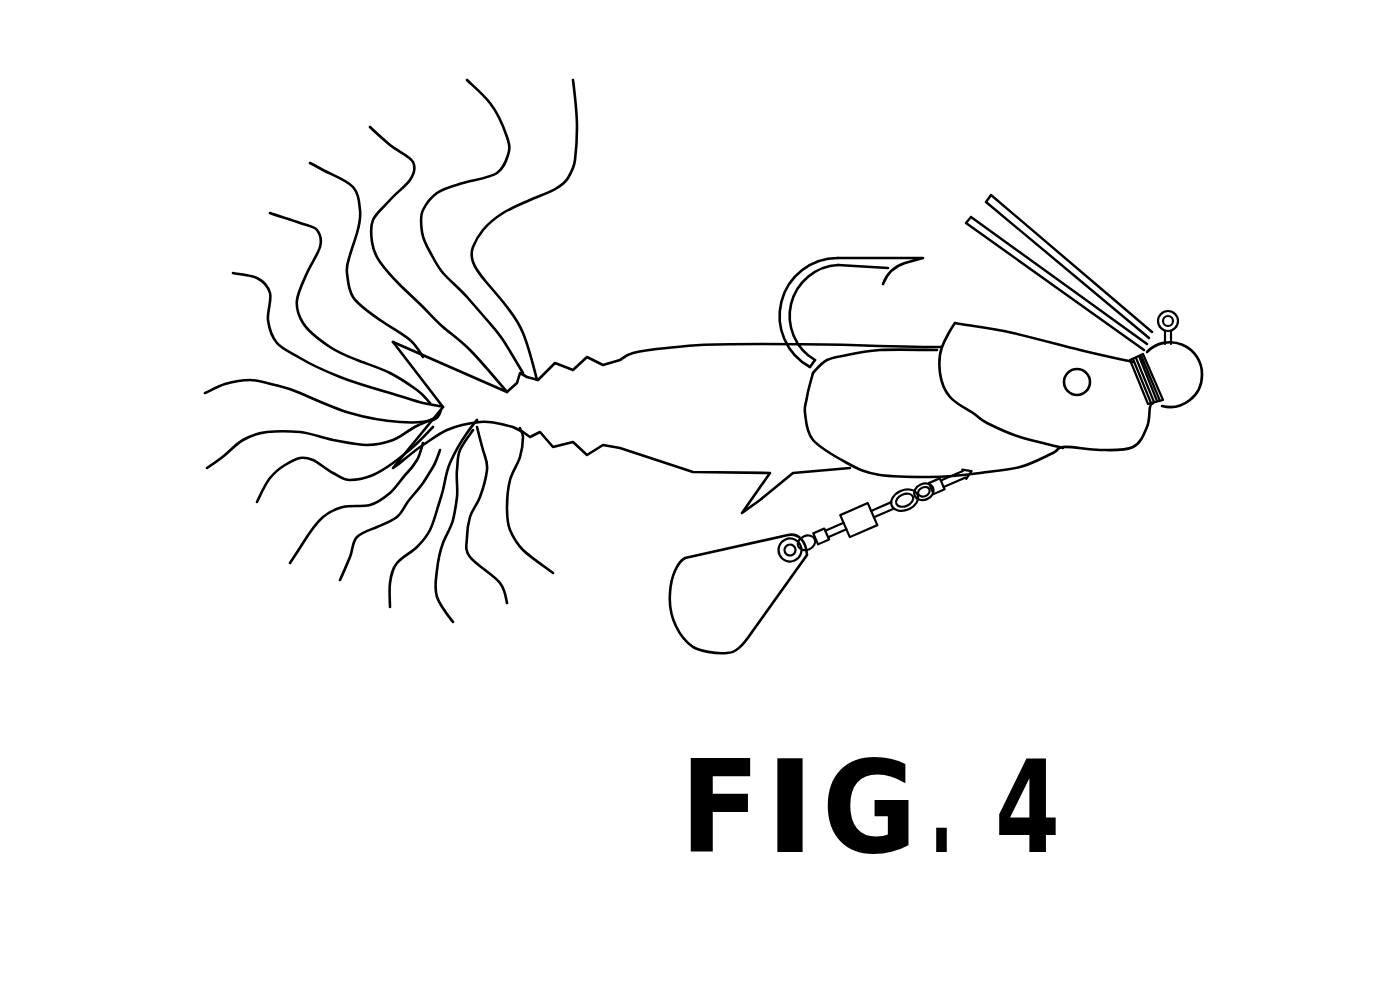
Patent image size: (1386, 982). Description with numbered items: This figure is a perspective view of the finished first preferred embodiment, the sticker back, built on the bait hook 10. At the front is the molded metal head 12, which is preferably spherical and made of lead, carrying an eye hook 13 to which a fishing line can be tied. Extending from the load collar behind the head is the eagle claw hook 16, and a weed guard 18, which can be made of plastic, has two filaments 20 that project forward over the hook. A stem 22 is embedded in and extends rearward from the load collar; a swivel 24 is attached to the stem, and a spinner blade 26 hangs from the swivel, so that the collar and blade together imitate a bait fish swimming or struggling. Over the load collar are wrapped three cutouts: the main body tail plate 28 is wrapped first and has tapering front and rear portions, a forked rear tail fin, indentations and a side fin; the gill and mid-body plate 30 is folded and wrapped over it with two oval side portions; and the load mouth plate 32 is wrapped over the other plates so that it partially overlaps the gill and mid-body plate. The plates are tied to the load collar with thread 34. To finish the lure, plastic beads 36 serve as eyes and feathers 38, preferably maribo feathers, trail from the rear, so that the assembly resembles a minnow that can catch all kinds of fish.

The bait hook 10 is at (1203, 373).
The molded metal head 12 is at (1203, 400).
The eye hook 13 is at (1177, 312).
The eagle claw hook 16 is at (843, 257).
The weed guard 18 is at (1127, 307).
The filaments 20 is at (990, 194).
The stem 22 is at (953, 482).
The swivel 24 is at (868, 537).
The spinner blade 26 is at (677, 568).
The main body tail plate 28 is at (733, 345).
The gill and mid-body plate 30 is at (1020, 470).
The load mouth plate 32 is at (1130, 440).
The thread 34 is at (1133, 357).
The plastic beads 36 is at (1064, 382).
The feathers 38 is at (260, 193).